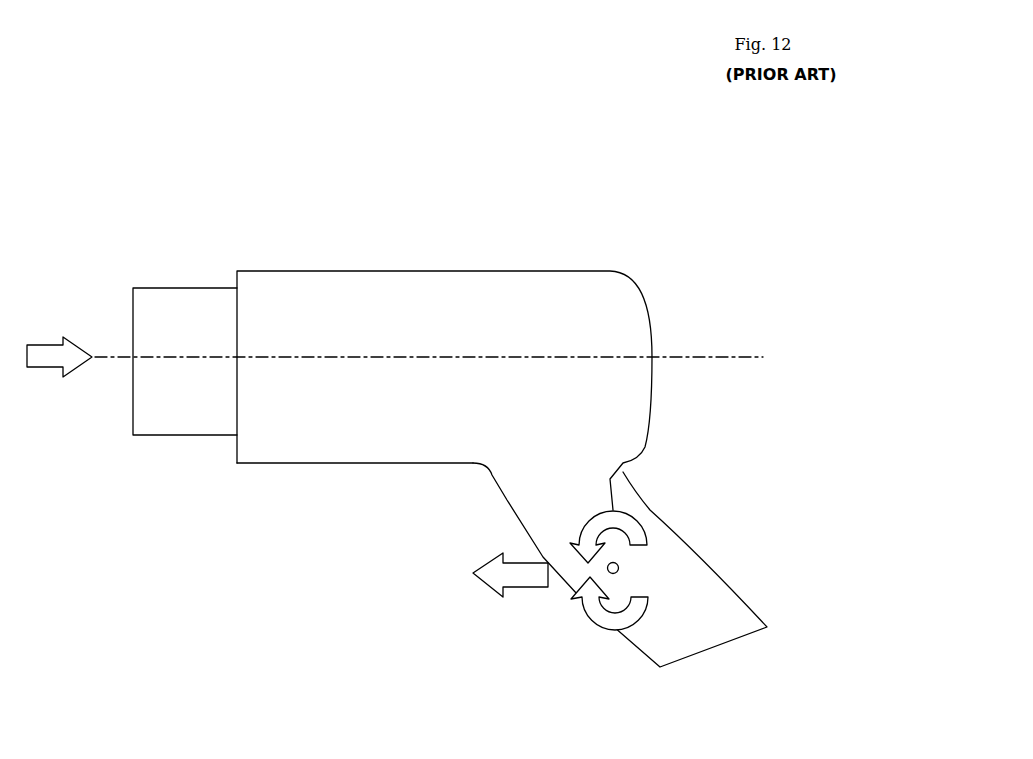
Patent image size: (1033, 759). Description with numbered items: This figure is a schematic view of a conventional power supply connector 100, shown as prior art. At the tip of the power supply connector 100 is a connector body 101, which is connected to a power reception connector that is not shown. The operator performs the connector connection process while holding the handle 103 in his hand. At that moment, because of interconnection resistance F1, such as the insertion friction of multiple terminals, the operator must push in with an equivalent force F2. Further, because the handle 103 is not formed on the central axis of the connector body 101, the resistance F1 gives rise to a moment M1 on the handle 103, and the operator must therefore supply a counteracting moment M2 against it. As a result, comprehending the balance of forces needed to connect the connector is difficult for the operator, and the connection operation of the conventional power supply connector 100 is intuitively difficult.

The power supply connector 100 is at (535, 213).
The connector body 101 is at (192, 429).
The handle 103 is at (670, 570).
The moment M1 is at (602, 602).
The moment M2 is at (623, 472).
The interconnection resistance F1 is at (59, 341).
The force F2 is at (510, 589).